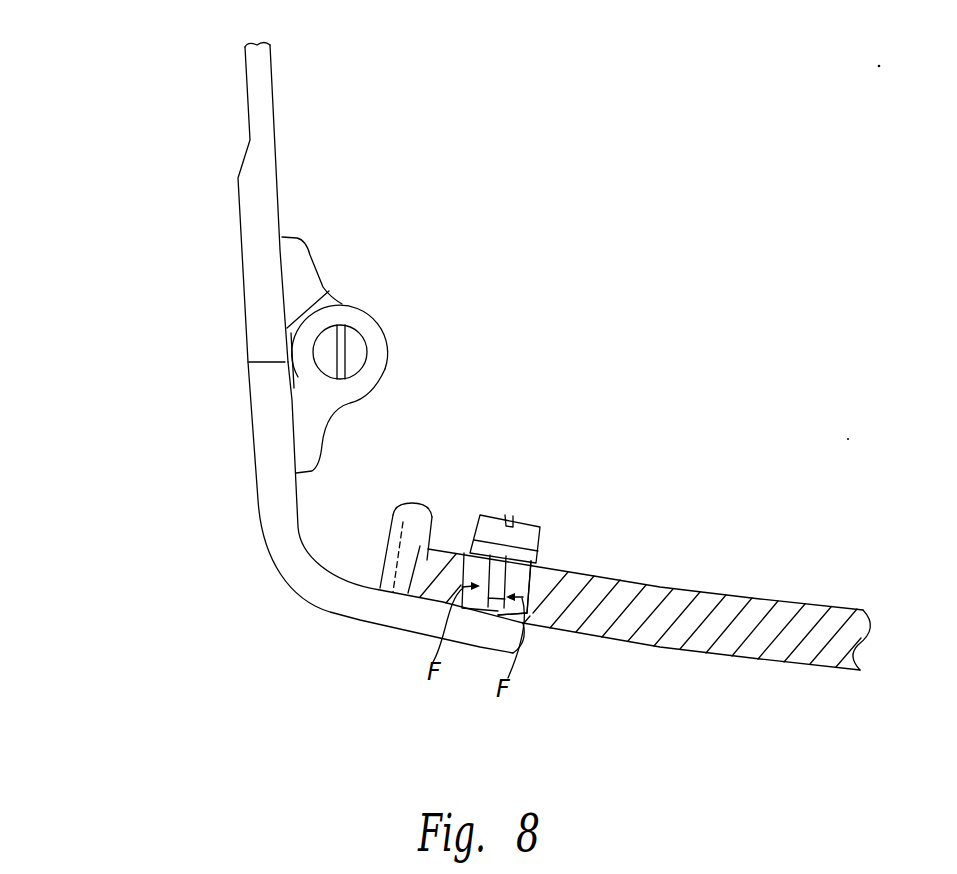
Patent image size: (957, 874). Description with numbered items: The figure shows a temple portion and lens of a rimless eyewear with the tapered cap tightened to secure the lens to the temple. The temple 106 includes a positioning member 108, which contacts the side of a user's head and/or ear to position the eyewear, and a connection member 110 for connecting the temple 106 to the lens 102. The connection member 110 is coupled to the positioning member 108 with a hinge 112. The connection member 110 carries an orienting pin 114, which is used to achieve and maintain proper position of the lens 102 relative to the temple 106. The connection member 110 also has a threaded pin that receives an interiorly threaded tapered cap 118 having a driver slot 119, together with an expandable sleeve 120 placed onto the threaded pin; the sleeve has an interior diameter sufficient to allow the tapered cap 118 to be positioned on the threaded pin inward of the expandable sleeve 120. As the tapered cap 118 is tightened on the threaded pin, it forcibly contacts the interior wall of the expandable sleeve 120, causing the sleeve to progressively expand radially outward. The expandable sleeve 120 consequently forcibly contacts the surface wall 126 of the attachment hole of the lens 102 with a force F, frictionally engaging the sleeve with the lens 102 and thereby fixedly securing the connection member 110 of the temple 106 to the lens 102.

The lens 102 is at (772, 600).
The temple 106 is at (168, 283).
The positioning member 108 is at (279, 170).
The connection member 110 is at (285, 580).
The hinge 112 is at (332, 296).
The orienting pin 114 is at (420, 505).
The tapered cap 118 is at (566, 565).
The driver slot 119 is at (513, 514).
The expandable sleeve 120 is at (537, 578).
The surface wall 126 is at (525, 578).